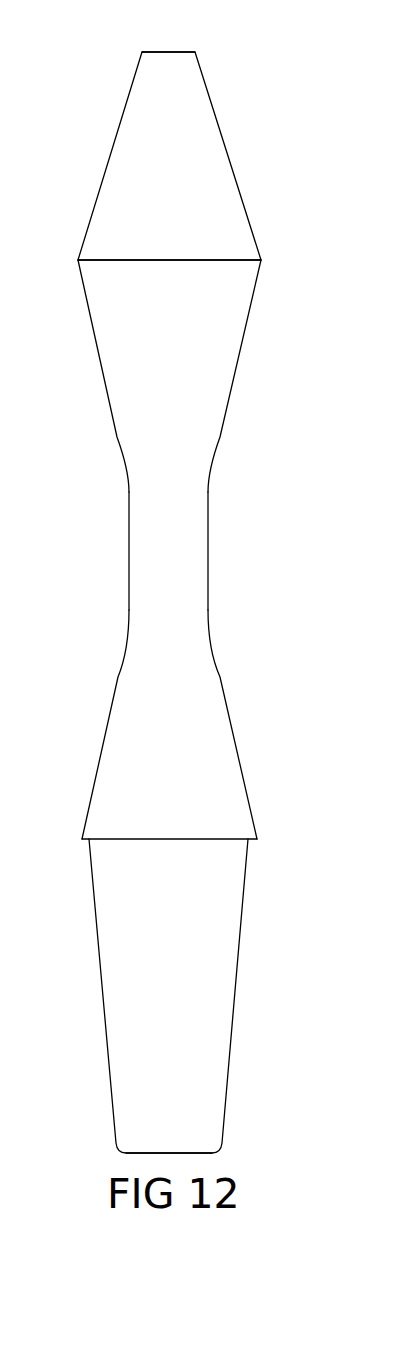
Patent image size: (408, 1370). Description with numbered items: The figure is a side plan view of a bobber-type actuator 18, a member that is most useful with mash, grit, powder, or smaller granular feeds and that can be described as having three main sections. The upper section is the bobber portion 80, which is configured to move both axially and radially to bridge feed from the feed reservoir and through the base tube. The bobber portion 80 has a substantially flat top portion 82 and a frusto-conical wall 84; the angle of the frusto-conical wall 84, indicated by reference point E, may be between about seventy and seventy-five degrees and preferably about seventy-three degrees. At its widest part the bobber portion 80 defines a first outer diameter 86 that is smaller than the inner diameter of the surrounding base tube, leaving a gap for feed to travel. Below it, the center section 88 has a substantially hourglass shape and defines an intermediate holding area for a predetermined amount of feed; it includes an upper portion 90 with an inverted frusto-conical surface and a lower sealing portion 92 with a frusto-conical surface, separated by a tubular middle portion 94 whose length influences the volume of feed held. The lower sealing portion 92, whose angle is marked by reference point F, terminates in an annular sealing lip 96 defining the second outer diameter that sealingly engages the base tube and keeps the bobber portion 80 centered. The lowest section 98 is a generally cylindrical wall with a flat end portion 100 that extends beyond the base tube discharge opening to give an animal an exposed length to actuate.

The bobber-type actuator 18 is at (176, 591).
The bobber portion 80 is at (60, 50).
The flat top portion 82 is at (175, 51).
The frusto-conical wall 84 is at (192, 118).
The outer diameter 86 is at (262, 260).
The center section 88 is at (60, 260).
The upper portion 90 is at (210, 360).
The lower sealing portion 92 is at (202, 713).
The tubular middle portion 94 is at (194, 552).
The annular sealing lip 96 is at (266, 851).
The lowest section 98 is at (60, 841).
The flat end portion 100 is at (187, 1151).
The reference point E is at (112, 177).
The angle F is at (226, 751).